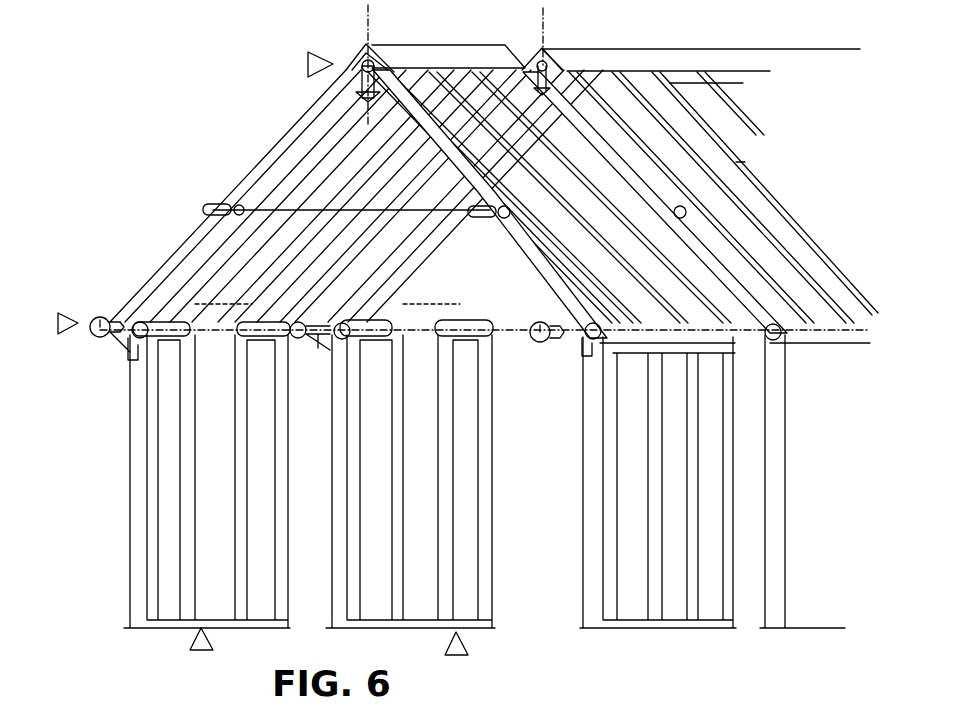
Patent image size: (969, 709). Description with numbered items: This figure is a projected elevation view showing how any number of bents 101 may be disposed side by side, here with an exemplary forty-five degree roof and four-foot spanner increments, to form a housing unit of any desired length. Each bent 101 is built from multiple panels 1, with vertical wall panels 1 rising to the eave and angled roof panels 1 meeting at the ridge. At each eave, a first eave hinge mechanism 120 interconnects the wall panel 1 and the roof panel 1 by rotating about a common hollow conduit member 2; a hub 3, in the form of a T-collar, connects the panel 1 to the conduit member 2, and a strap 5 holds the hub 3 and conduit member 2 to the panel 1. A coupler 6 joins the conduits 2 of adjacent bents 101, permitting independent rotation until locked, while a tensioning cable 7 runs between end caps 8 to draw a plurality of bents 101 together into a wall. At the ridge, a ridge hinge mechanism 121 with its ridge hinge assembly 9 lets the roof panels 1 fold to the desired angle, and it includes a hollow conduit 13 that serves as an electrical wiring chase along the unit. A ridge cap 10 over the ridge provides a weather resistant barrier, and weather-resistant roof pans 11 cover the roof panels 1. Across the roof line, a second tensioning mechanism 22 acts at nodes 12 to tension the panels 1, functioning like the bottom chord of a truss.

The panel 1 is at (292, 150).
The conduit member 2 is at (213, 340).
The hub 3 is at (137, 350).
The strap 5 is at (230, 316).
The coupler 6 is at (314, 333).
The tensioning cable 7 is at (128, 325).
The end cap 8 is at (98, 320).
The ridge hinge assembly 9 is at (362, 56).
The ridge cap 10 is at (611, 52).
The roof pan 11 is at (754, 168).
The node 12 is at (213, 204).
The conduit 13 is at (367, 100).
The second tensioning mechanism 22 is at (315, 213).
The bent 101 is at (201, 650).
The first eave hinge mechanism 120 is at (58, 323).
The ridge hinge mechanism 121 is at (308, 64).